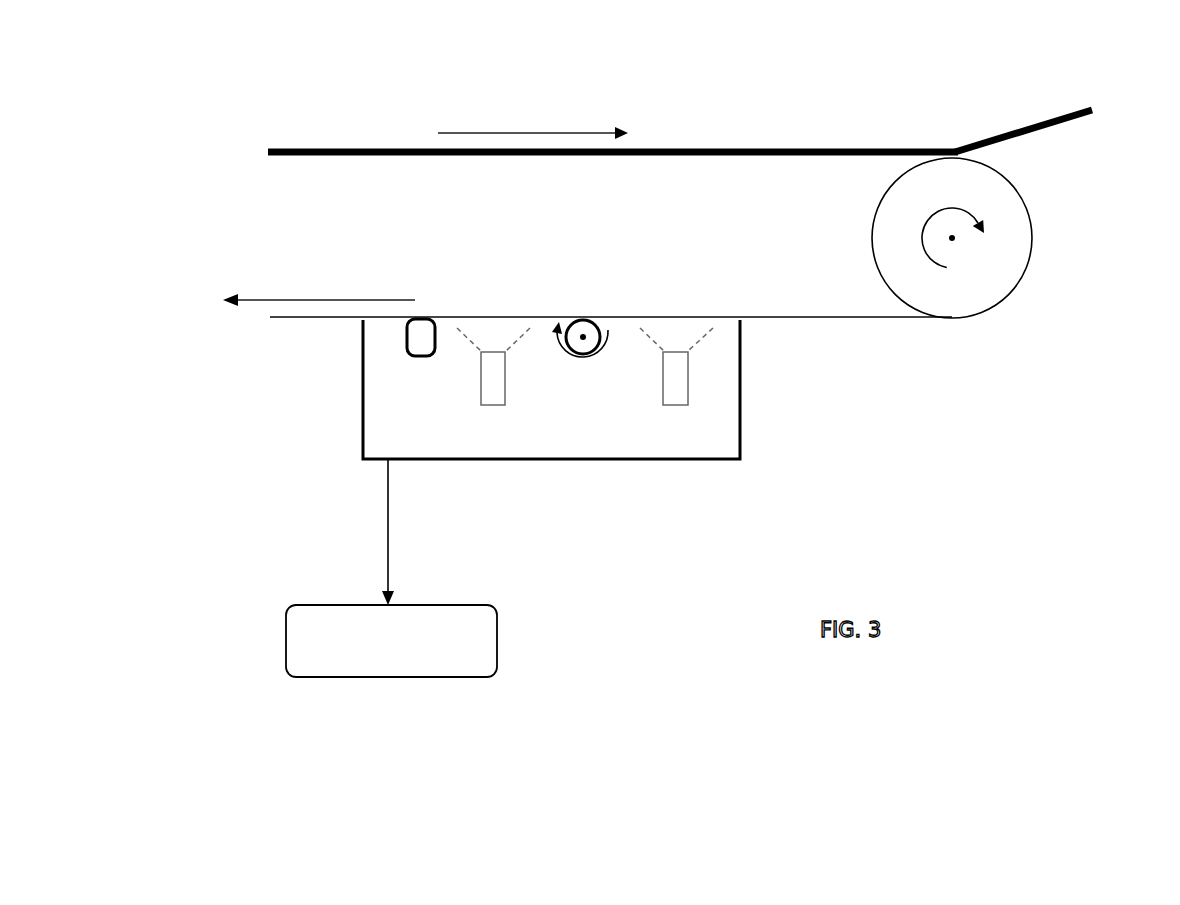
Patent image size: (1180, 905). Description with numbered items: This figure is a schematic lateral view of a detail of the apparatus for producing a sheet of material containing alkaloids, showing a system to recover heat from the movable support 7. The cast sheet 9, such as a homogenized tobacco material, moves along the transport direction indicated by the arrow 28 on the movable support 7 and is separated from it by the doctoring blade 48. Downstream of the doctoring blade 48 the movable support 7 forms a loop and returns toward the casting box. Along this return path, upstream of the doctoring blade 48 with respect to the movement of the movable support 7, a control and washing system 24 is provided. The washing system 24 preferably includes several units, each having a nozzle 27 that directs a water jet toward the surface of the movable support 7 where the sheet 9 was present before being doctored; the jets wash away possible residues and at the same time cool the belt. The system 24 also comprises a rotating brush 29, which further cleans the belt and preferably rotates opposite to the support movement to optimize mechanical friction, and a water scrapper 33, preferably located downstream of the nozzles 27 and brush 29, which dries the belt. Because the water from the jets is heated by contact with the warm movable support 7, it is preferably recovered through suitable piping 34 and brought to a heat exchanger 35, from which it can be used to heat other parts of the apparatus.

The sheet of material containing alkaloids 9 is at (722, 148).
The arrow 28 is at (490, 135).
The doctoring blade 48 is at (993, 153).
The movable support 7 is at (1030, 262).
The control and washing system 24 is at (758, 457).
The water scrapper 33 is at (422, 333).
The rotating brush 29 is at (585, 337).
The nozzle 27 is at (675, 377).
The piping 34 is at (388, 513).
The heat exchanger 35 is at (405, 672).